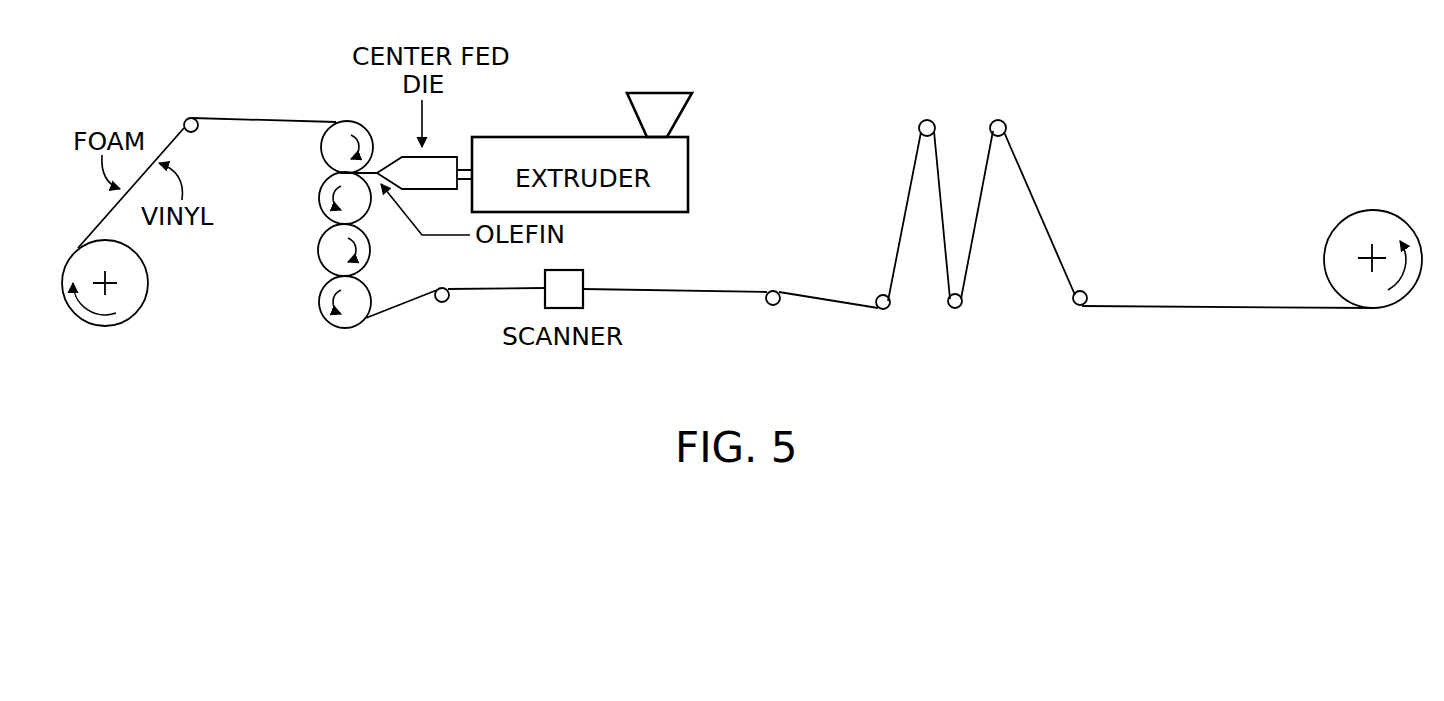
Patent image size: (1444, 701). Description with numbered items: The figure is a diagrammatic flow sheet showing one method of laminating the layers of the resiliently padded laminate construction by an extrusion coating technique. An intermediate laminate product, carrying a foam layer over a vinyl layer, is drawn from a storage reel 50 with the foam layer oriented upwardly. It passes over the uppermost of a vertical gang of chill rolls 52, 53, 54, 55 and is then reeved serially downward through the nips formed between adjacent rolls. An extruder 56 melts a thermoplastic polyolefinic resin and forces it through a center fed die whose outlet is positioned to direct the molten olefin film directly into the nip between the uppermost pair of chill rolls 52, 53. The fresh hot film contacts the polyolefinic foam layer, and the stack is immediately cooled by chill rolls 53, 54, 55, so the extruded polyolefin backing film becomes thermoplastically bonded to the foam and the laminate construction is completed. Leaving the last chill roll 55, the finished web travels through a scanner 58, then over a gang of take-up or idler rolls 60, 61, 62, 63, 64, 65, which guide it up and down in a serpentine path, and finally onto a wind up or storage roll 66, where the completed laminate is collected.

The storage reel 50 is at (140, 318).
The chill roll 52 is at (320, 144).
The chill roll 53 is at (320, 200).
The chill roll 54 is at (320, 250).
The chill roll 55 is at (320, 305).
The extruder 56 is at (690, 175).
The scanner 58 is at (584, 282).
The idler roll 60 is at (775, 306).
The idler roll 61 is at (885, 310).
The idler roll 62 is at (921, 121).
The idler roll 63 is at (955, 309).
The idler roll 64 is at (995, 121).
The idler roll 65 is at (1079, 306).
The storage roll 66 is at (1405, 300).